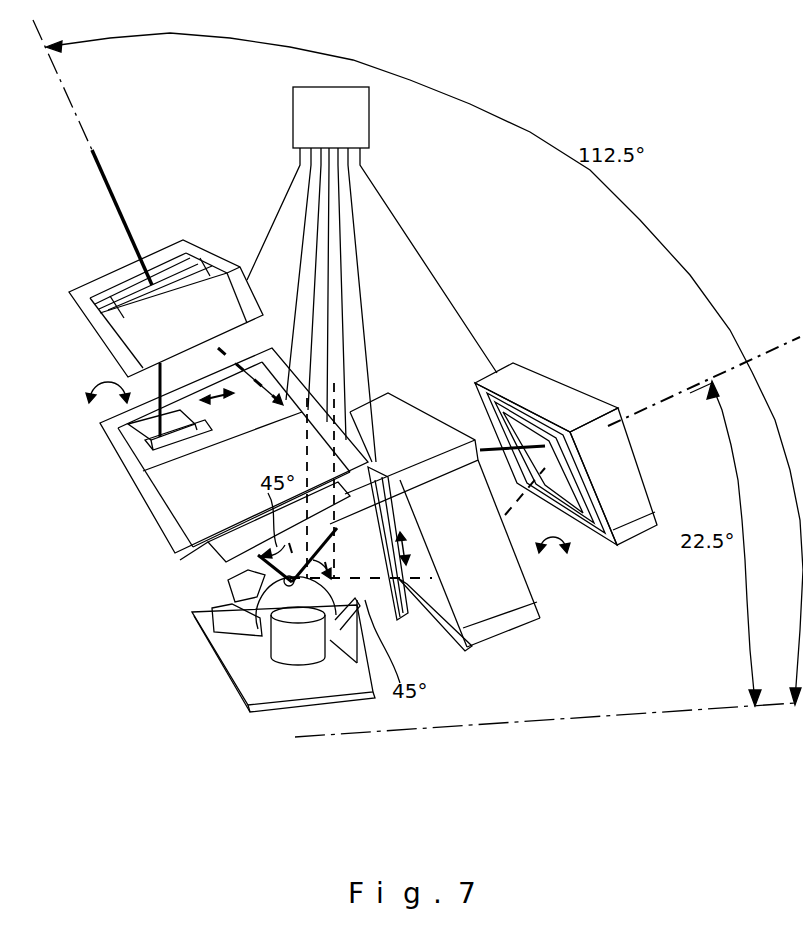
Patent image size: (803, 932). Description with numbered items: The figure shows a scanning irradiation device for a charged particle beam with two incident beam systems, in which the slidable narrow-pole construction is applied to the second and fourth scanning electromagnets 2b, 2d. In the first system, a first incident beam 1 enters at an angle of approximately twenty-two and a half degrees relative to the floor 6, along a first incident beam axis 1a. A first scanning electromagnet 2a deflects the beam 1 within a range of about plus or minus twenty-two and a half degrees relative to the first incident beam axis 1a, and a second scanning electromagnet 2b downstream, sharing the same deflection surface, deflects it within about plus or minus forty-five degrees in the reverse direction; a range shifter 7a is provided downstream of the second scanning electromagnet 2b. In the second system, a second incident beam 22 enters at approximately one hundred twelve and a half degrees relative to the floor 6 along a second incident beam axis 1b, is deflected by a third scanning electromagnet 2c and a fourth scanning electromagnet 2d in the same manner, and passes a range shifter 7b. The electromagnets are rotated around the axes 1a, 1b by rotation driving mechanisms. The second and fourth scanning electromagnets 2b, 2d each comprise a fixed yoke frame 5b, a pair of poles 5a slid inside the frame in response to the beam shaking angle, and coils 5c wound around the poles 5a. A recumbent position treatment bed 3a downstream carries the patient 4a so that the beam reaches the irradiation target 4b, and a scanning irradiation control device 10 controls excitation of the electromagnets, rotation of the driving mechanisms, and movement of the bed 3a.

The first incident beam axis 1 is at (640, 406).
The first incident beam axis 1a is at (690, 394).
The second incident beam axis 1b is at (108, 175).
The first scanning electromagnet 2a is at (642, 527).
The second scanning electromagnet 2b is at (527, 620).
The third scanning electromagnet 2c is at (88, 318).
The fourth scanning electromagnet 2d is at (125, 475).
The recumbent position treatment bed 3a is at (250, 688).
The patient 4a is at (213, 615).
The irradiation target 4b is at (245, 596).
The poles 5a is at (118, 436).
The fixed yoke frame 5b is at (86, 398).
The coils 5c is at (178, 407).
The floor 6 is at (633, 718).
The range shifter 7a is at (400, 615).
The range shifter 7b is at (220, 557).
The scanning irradiation control device 10 is at (369, 113).
The second incident beam 22 is at (128, 218).